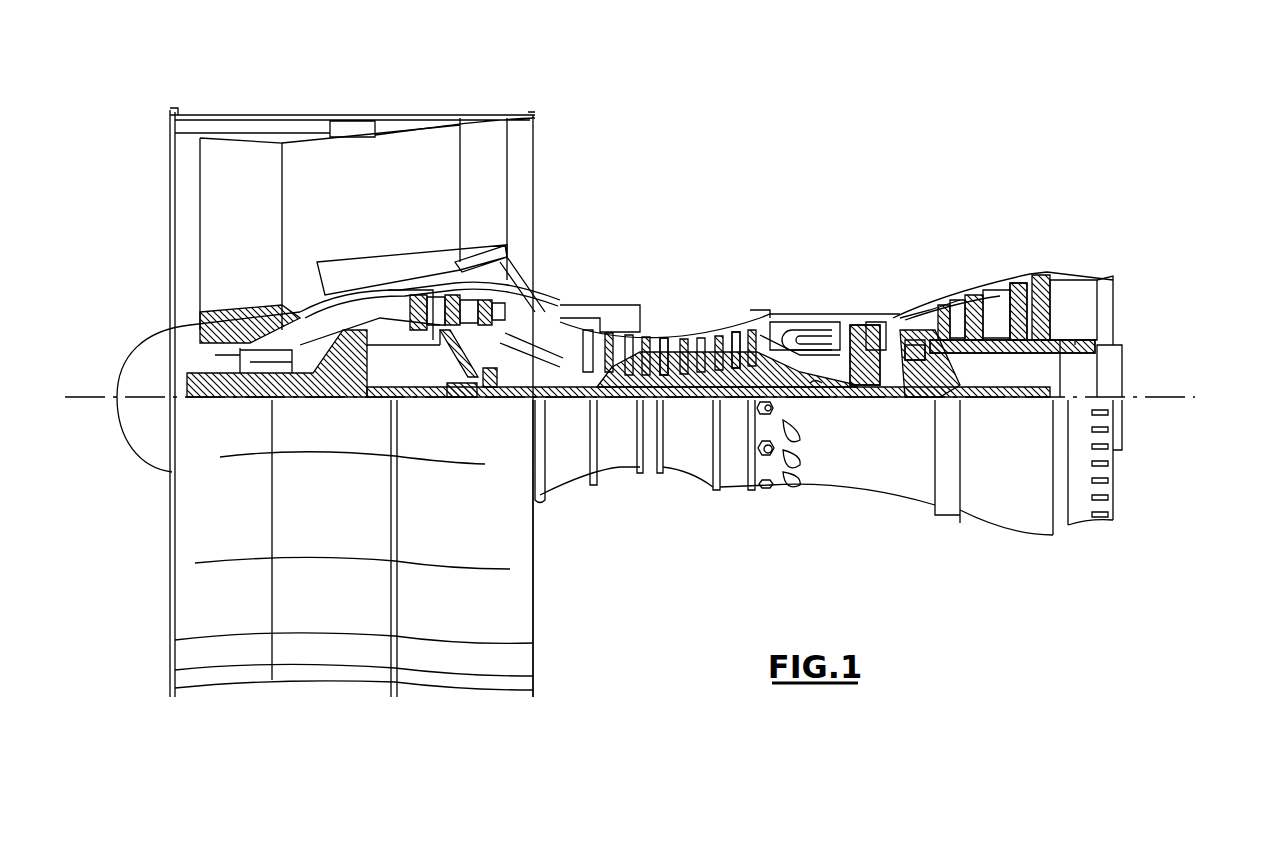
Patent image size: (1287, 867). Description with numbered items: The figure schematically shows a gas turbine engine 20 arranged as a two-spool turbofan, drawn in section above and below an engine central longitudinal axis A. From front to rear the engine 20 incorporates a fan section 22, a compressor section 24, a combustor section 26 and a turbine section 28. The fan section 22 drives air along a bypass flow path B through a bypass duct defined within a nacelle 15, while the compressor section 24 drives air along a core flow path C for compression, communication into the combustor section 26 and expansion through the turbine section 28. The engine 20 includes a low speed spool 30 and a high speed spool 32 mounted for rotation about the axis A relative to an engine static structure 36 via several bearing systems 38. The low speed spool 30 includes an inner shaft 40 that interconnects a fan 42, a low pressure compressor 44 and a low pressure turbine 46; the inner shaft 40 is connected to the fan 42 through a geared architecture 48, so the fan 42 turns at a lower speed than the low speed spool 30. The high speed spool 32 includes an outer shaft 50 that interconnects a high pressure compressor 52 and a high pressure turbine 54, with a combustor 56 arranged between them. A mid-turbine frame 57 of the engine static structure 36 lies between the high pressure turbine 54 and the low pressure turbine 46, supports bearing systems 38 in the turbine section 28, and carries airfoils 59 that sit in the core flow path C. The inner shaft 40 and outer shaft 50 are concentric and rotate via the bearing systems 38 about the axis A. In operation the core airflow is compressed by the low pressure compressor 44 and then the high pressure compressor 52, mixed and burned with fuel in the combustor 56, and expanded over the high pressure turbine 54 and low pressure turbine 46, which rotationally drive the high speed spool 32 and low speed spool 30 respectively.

The gas turbine engine 20 is at (818, 165).
The fan section 22 is at (282, 104).
The nacelle 15 is at (355, 122).
The fan 42 is at (222, 243).
The low pressure compressor 44 is at (450, 320).
The compressor section 24 is at (602, 262).
The high pressure compressor 52 is at (665, 385).
The high speed spool 32 is at (738, 345).
The combustor section 26 is at (805, 296).
The combustor 56 is at (808, 340).
The high pressure turbine 54 is at (874, 322).
The mid-turbine frame 57 is at (913, 303).
The turbine section 28 is at (955, 258).
The low pressure turbine 46 is at (1000, 280).
The airfoils 59 is at (912, 333).
The outer shaft 50 is at (817, 392).
The bearing systems 38 is at (487, 400).
The geared architecture 48 is at (358, 382).
The inner shaft 40 is at (553, 402).
The low speed spool 30 is at (692, 404).
The engine static structure 36 is at (730, 404).
The engine central longitudinal axis A is at (1207, 397).
The bypass flow path B is at (318, 190).
The core flow path C is at (352, 296).